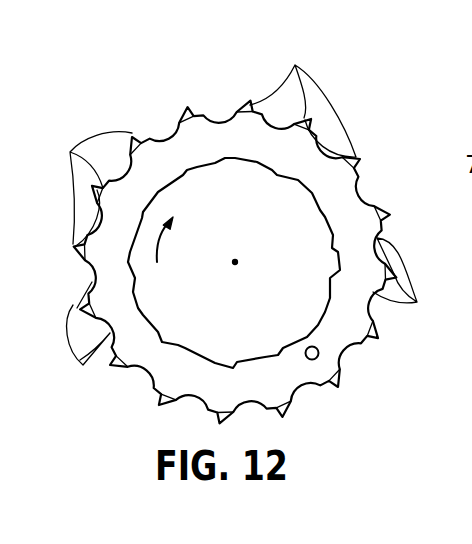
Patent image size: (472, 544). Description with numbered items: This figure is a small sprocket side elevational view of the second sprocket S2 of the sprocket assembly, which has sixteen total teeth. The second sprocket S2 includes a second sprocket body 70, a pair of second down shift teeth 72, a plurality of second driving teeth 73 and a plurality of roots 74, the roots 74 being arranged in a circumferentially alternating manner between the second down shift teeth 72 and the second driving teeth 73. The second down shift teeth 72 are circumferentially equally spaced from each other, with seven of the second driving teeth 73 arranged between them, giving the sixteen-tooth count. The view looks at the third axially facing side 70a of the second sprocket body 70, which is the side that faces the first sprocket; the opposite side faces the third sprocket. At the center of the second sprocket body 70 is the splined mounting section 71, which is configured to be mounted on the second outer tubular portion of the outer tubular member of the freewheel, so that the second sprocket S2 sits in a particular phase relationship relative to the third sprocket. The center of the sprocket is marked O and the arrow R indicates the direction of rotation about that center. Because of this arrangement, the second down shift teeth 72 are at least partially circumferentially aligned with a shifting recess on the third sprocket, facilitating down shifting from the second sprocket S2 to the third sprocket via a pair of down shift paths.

The second sprocket S2 is at (273, 241).
The second sprocket body 70 is at (158, 318).
The third axially facing side 70a is at (263, 151).
The splined mounting section 71 is at (272, 172).
The second down shift teeth 72 is at (178, 112).
The second driving teeth 73 is at (206, 141).
The roots 74 is at (253, 317).
The center of rotation O is at (238, 259).
The rotation direction R is at (167, 244).